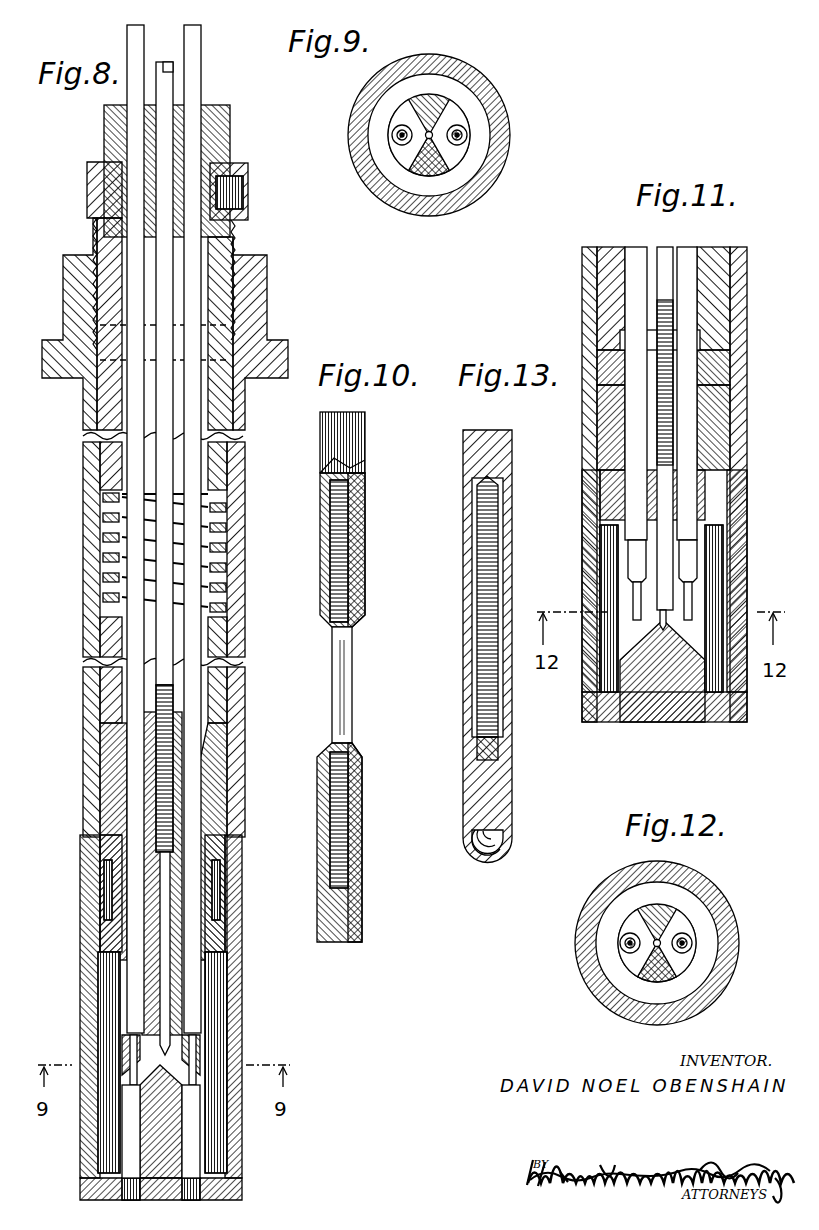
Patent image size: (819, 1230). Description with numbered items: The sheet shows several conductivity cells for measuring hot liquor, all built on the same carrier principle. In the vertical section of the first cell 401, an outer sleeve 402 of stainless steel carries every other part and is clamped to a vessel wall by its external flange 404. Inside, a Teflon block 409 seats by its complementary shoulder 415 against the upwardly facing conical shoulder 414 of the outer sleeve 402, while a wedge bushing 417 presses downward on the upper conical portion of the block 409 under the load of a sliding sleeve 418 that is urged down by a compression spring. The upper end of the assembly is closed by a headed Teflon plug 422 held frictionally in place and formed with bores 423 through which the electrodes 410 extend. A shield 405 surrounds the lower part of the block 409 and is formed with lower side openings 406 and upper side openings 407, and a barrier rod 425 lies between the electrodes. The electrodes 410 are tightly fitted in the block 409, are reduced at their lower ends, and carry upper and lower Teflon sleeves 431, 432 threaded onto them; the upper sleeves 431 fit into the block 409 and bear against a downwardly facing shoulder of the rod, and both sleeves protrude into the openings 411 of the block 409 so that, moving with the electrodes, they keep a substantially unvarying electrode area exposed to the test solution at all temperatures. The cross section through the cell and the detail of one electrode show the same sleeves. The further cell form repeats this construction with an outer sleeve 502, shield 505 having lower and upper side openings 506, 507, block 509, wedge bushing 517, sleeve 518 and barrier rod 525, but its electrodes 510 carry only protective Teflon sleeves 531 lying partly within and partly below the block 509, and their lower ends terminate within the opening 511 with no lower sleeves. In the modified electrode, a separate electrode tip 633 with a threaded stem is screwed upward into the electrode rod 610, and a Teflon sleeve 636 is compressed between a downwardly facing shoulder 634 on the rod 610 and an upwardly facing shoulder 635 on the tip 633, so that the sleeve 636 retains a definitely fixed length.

In FIG. 8, the conductivity cell 401 is at (82, 600).
In FIG. 8, the outer sleeve 402 is at (80, 670).
In FIG. 8, the external flange 404 is at (288, 352).
In FIG. 8, the shield 405 is at (244, 1033).
In FIG. 9, the shield 405 is at (510, 116).
In FIG. 8, the lower side openings 406 is at (90, 1167).
In FIG. 8, the upper side openings 407 is at (88, 970).
In FIG. 8, the block 409 is at (98, 792).
In FIG. 9, the block 409 is at (432, 177).
In FIG. 8, the electrodes 410 is at (130, 93).
In FIG. 9, the electrodes 410 is at (402, 135).
In FIG. 10, the electrodes 410 is at (320, 432).
In FIG. 8, the openings of the block 411 is at (198, 1070).
In FIG. 9, the openings of the block 411 is at (418, 157).
In FIG. 8, the conical shoulder 414 is at (107, 825).
In FIG. 8, the complementary shoulder 415 is at (120, 838).
In FIG. 8, the wedge bushing 417 is at (108, 738).
In FIG. 8, the sleeve 418 is at (217, 643).
In FIG. 8, the headed Teflon plug 422 is at (104, 134).
In FIG. 8, the bores 423 is at (198, 108).
In FIG. 8, the barrier rod 425 is at (163, 78).
In FIG. 9, the barrier rod 425 is at (432, 132).
In FIG. 8, the upper Teflon sleeves 431 is at (132, 1008).
In FIG. 10, the upper Teflon sleeves 431 is at (320, 545).
In FIG. 8, the lower Teflon sleeves 432 is at (130, 1110).
In FIG. 10, the lower Teflon sleeves 432 is at (318, 893).
In FIG. 11, the outer sleeve 502 is at (582, 275).
In FIG. 11, the shield 505 is at (747, 594).
In FIG. 12, the shield 505 is at (718, 1007).
In FIG. 11, the lower side openings 506 is at (743, 690).
In FIG. 11, the upper side openings 507 is at (590, 535).
In FIG. 11, the block 509 is at (730, 415).
In FIG. 12, the block 509 is at (652, 989).
In FIG. 11, the electrodes 510 is at (640, 247).
In FIG. 12, the electrodes 510 is at (625, 945).
In FIG. 11, the opening 511 is at (625, 593).
In FIG. 12, the opening 511 is at (627, 923).
In FIG. 11, the wedge bushing 517 is at (718, 363).
In FIG. 11, the sleeve 518 is at (610, 302).
In FIG. 11, the barrier rod 525 is at (665, 252).
In FIG. 12, the barrier rod 525 is at (657, 942).
In FIG. 11, the protective Teflon sleeves 531 is at (635, 558).
In FIG. 13, the electrode rod 610 is at (465, 436).
In FIG. 13, the electrode tip 633 is at (465, 843).
In FIG. 13, the downwardly facing shoulder 634 is at (466, 658).
In FIG. 13, the upwardly facing shoulder 635 is at (470, 742).
In FIG. 13, the Teflon sleeve 636 is at (466, 700).